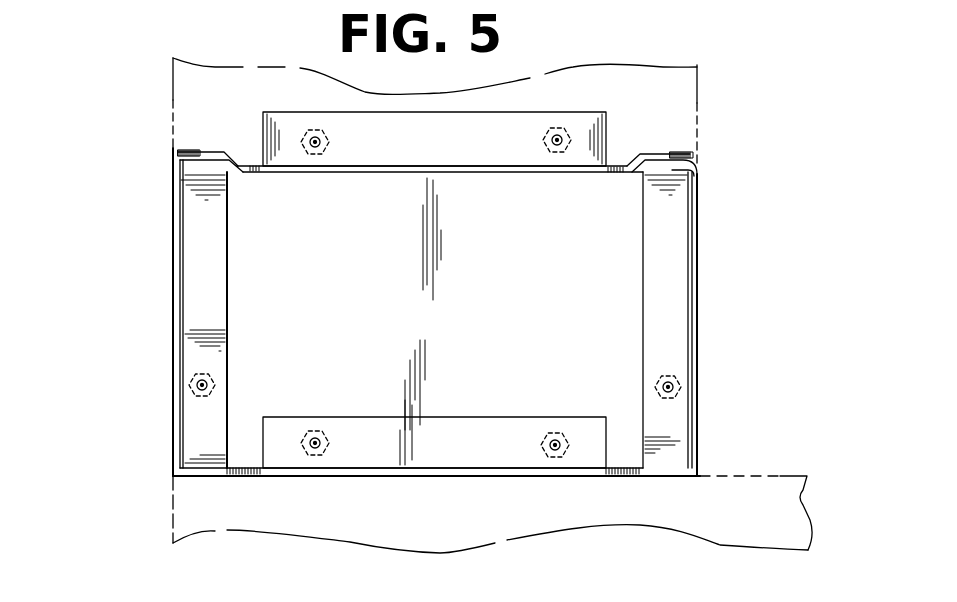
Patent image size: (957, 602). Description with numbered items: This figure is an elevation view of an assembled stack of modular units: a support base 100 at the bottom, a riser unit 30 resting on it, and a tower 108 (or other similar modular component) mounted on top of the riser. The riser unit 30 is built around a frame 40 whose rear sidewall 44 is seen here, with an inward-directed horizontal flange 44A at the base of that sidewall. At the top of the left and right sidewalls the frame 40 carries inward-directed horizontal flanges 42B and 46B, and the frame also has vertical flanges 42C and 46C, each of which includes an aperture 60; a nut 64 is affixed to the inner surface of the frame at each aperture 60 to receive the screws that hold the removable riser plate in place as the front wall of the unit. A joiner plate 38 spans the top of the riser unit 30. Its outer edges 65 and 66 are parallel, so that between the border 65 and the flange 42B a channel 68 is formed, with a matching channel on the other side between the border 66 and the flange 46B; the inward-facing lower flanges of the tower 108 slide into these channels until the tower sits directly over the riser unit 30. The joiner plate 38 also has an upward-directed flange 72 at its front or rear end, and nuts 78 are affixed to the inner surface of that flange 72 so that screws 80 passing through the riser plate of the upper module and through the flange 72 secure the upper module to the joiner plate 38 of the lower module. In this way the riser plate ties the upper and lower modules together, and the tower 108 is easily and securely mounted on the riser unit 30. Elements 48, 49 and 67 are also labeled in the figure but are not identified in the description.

The riser unit 30 is at (738, 288).
The joiner plate 38 is at (248, 140).
The frame 40 is at (158, 297).
The inward-directed horizontal flange 42B is at (202, 173).
The vertical flange 42C is at (215, 308).
The rear sidewall 44 is at (443, 330).
The inward-directed horizontal flange 44A is at (390, 470).
The inward-directed horizontal flange 46B is at (663, 173).
The vertical flange 46C is at (662, 310).
The first outer wall 48 is at (173, 347).
The second outer wall 49 is at (698, 332).
The aperture 60 is at (218, 387).
The nut 64 is at (180, 387).
The outer edge of joiner plate 65 is at (188, 150).
The outer edge of joiner plate 66 is at (670, 152).
The return flange 67 is at (702, 177).
The channel 68 is at (180, 163).
The upward-directed flange 72 is at (438, 162).
The nut 78 is at (315, 157).
The screw 80 is at (330, 141).
The support base 100 is at (780, 505).
The tower 108 is at (680, 117).